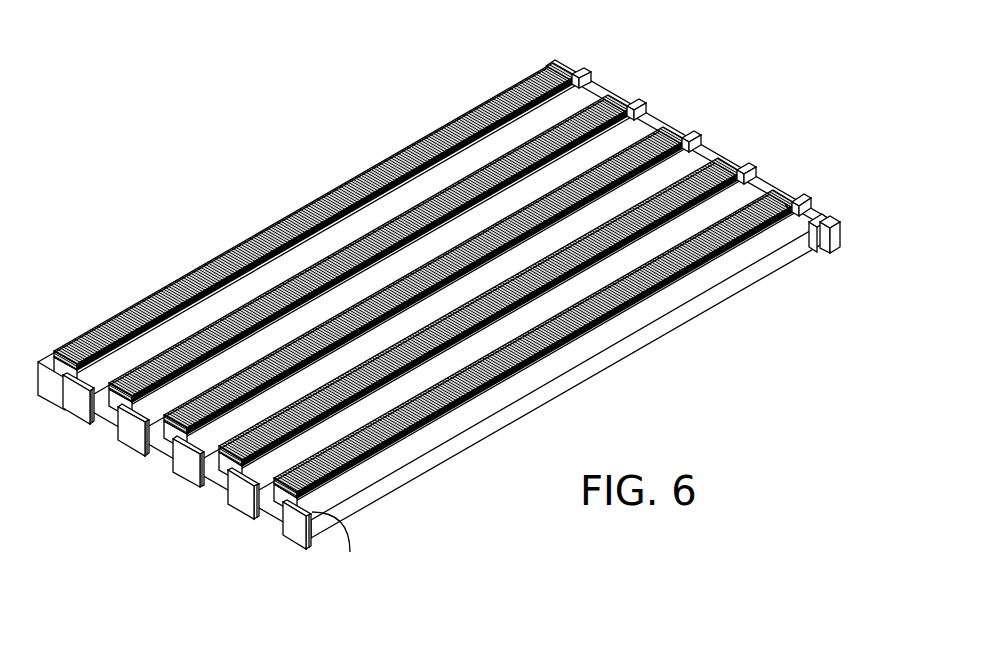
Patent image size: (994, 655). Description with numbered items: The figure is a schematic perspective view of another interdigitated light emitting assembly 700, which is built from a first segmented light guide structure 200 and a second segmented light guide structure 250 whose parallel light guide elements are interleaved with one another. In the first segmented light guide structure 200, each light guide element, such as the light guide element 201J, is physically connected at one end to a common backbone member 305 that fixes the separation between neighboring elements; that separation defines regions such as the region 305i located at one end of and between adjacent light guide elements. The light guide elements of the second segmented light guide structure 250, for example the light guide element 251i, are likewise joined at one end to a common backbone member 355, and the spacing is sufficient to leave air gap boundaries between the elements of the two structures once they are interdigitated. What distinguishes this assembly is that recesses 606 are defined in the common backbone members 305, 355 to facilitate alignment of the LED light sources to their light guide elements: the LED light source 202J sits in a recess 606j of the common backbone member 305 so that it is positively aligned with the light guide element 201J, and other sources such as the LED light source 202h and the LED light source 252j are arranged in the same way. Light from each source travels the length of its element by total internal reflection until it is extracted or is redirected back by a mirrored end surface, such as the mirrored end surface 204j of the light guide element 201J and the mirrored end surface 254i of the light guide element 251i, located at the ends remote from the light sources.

The interdigitated light emitting assembly 700 is at (445, 298).
The second segmented light guide structure 250 is at (625, 76).
The first segmented light guide structure 200 is at (445, 325).
The common backbone member 305 is at (160, 445).
The region 305i is at (233, 494).
The light guide element 201J is at (566, 388).
The LED light source 202h is at (238, 488).
The LED light source 202J is at (300, 522).
The mirrored end surface 204j is at (818, 246).
The light guide element 251i is at (535, 357).
The LED light source 252j is at (792, 206).
The mirrored end surface 254i is at (280, 486).
The common backbone member 355 is at (813, 216).
The recesses 606 is at (785, 206).
The recess 606j is at (350, 552).